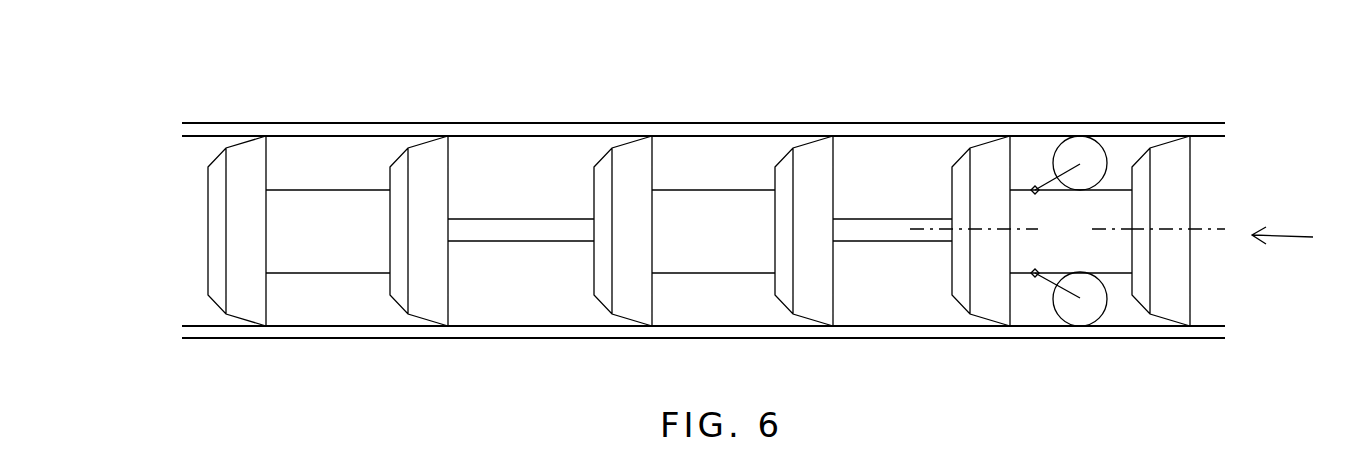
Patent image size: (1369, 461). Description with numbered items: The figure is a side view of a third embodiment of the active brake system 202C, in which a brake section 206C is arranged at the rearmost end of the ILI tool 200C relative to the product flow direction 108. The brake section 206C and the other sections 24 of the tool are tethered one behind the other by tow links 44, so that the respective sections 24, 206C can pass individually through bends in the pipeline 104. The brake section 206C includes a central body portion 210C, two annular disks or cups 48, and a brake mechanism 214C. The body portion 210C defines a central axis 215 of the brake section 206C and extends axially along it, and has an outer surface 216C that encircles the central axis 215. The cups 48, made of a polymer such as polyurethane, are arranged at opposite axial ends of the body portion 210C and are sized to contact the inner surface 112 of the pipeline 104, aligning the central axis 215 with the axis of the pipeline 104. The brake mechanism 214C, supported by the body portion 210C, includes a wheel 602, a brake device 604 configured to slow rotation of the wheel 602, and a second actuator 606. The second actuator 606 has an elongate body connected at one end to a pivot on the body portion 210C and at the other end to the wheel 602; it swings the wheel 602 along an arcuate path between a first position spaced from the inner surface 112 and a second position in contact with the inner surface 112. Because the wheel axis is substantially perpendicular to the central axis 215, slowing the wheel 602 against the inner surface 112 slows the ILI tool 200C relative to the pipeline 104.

The ILI tool 200C is at (143, 160).
The annular disks or cups 48 is at (774, 240).
The sections 24 is at (342, 156).
The tow links 44 is at (523, 220).
The inner surface 112 is at (486, 143).
The pipeline 104 is at (503, 340).
The brake section 206C is at (1200, 190).
The central axis 215 is at (1223, 228).
The outer surface 216C is at (1090, 241).
The product flow direction 108 is at (1310, 226).
The active brake system 202C is at (1248, 305).
The central body portion 210C is at (1106, 140).
The brake mechanism 214C is at (1041, 309).
The wheel 602 is at (1108, 157).
The brake device 604 is at (1081, 165).
The second actuator 606 is at (1035, 186).